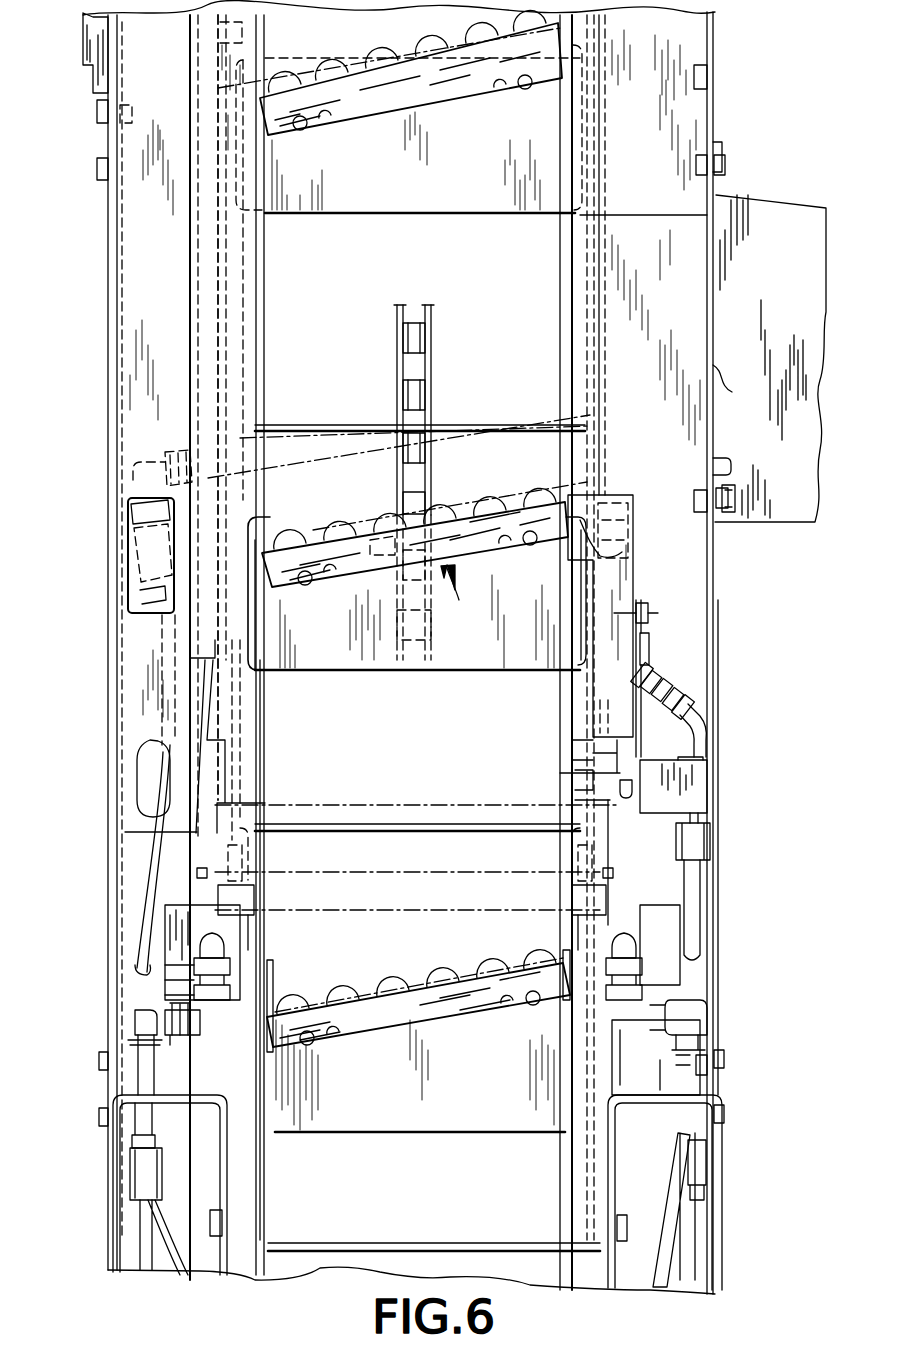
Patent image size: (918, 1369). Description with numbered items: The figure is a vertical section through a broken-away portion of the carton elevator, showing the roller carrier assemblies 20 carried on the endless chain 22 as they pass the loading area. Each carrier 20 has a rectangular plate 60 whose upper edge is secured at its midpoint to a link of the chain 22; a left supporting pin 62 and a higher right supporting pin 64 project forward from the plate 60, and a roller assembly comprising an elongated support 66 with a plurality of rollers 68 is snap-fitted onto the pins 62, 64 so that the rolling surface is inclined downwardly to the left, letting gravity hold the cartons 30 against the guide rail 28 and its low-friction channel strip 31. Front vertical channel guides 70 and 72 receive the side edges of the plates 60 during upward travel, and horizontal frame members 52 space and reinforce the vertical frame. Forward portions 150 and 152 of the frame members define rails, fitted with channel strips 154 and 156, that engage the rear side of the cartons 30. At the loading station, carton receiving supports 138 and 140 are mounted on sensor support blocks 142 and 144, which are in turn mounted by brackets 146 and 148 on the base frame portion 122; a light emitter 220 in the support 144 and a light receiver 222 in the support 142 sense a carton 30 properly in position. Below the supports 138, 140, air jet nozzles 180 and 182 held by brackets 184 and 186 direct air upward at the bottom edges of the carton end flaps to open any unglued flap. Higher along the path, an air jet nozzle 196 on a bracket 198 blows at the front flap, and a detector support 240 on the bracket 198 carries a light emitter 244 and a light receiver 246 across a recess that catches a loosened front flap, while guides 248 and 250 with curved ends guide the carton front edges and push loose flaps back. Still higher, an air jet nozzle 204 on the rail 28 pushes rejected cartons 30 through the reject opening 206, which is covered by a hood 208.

The roller carrier assembly 20 is at (457, 598).
The endless chain 22 is at (428, 360).
The guide rail 28 is at (130, 368).
The cigarette carton 30 is at (542, 418).
The channel strip 31 is at (190, 418).
The horizontal frame member 52 is at (312, 430).
The rectangular plate 60 is at (345, 662).
The left supporting pin 62 is at (304, 585).
The right supporting pin 64 is at (532, 545).
The elongated support 66 is at (338, 566).
The roller 68 is at (383, 527).
The front vertical channel guide 70 is at (272, 1076).
The front vertical channel guide 72 is at (566, 1065).
The base frame portion 122 is at (116, 1172).
The carton receiving support 138 is at (262, 918).
The carton receiving support 140 is at (595, 932).
The sensor support block 142 is at (168, 885).
The sensor support block 144 is at (655, 885).
The bracket 146 is at (165, 978).
The bracket 148 is at (668, 988).
The forward rail portion 150 is at (268, 757).
The forward rail portion 152 is at (583, 757).
The channel strip 154 is at (262, 666).
The channel strip 156 is at (565, 666).
The air jet nozzle 180 is at (245, 960).
The air jet nozzle 182 is at (660, 968).
The bracket 184 is at (176, 1056).
The bracket 186 is at (655, 1078).
The air jet nozzle 196 is at (680, 698).
The bracket 198 is at (640, 792).
The air jet nozzle 204 is at (134, 470).
The reject opening 206 is at (728, 653).
The hood 208 is at (775, 200).
The light emitter 220 is at (600, 856).
The light receiver 222 is at (208, 872).
The detector support 240 is at (660, 611).
The light emitter 244 is at (650, 660).
The light receiver 246 is at (636, 531).
The guide 248 is at (580, 773).
The guide 250 is at (612, 562).